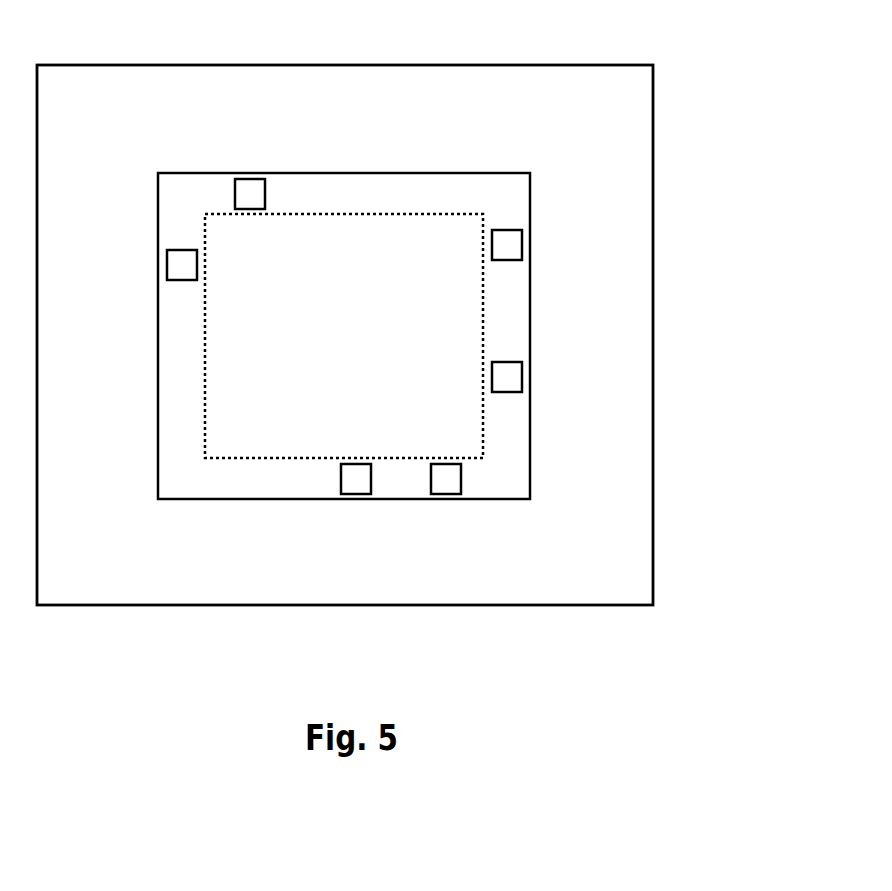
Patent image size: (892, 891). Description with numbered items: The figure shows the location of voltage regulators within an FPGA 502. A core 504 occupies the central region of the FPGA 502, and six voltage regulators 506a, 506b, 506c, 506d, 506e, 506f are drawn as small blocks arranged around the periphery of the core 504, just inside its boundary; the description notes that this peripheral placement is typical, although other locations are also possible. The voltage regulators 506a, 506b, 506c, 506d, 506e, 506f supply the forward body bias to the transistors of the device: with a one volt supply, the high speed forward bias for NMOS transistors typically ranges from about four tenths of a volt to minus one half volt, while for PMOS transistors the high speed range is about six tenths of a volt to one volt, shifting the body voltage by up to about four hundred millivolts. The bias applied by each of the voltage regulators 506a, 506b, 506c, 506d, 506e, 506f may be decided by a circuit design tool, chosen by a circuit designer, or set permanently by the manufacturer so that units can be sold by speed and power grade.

The FPGA 502 is at (653, 115).
The core 504 is at (300, 173).
The voltage regulator 506a is at (505, 230).
The voltage regulator 506b is at (505, 362).
The voltage regulator 506c is at (461, 478).
The voltage regulator 506d is at (371, 478).
The voltage regulator 506e is at (167, 263).
The voltage regulator 506f is at (235, 195).